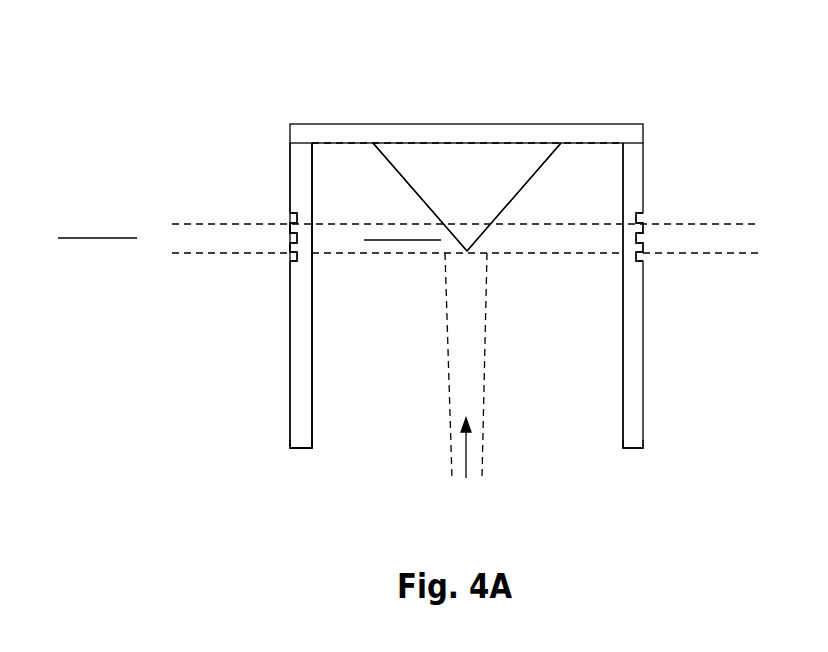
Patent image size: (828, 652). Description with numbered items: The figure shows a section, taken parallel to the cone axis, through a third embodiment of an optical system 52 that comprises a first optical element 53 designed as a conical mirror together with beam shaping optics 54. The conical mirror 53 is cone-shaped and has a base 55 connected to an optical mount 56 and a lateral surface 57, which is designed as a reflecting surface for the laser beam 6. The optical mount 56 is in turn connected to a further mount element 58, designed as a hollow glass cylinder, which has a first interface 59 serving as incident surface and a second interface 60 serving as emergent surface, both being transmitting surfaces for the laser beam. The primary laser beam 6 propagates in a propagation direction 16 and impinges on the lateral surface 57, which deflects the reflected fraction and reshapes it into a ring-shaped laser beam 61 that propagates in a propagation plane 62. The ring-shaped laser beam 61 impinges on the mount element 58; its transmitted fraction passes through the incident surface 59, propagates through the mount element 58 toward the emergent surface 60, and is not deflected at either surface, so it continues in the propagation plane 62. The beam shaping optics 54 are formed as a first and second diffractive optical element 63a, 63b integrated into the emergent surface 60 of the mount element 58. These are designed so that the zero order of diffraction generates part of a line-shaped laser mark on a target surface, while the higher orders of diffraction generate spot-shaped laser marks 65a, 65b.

The optical system 52 is at (155, 302).
The first optical element 53 is at (481, 196).
The beam shaping optics 54 is at (256, 205).
The base 55 is at (468, 133).
The optical mount 56 is at (583, 133).
The lateral surface 57 is at (387, 170).
The mount element 58 is at (302, 427).
The first interface 59 is at (321, 381).
The second interface 60 is at (282, 377).
The ring-shaped laser beam 61 is at (344, 258).
The propagation plane 62 is at (82, 230).
The first diffractive optical element 63a is at (636, 240).
The second diffractive optical element 63b is at (297, 240).
The spot-shaped laser mark 65a is at (692, 258).
The spot-shaped laser mark 65b is at (226, 258).
The laser beam 6 is at (483, 438).
The propagation direction 16 is at (466, 457).